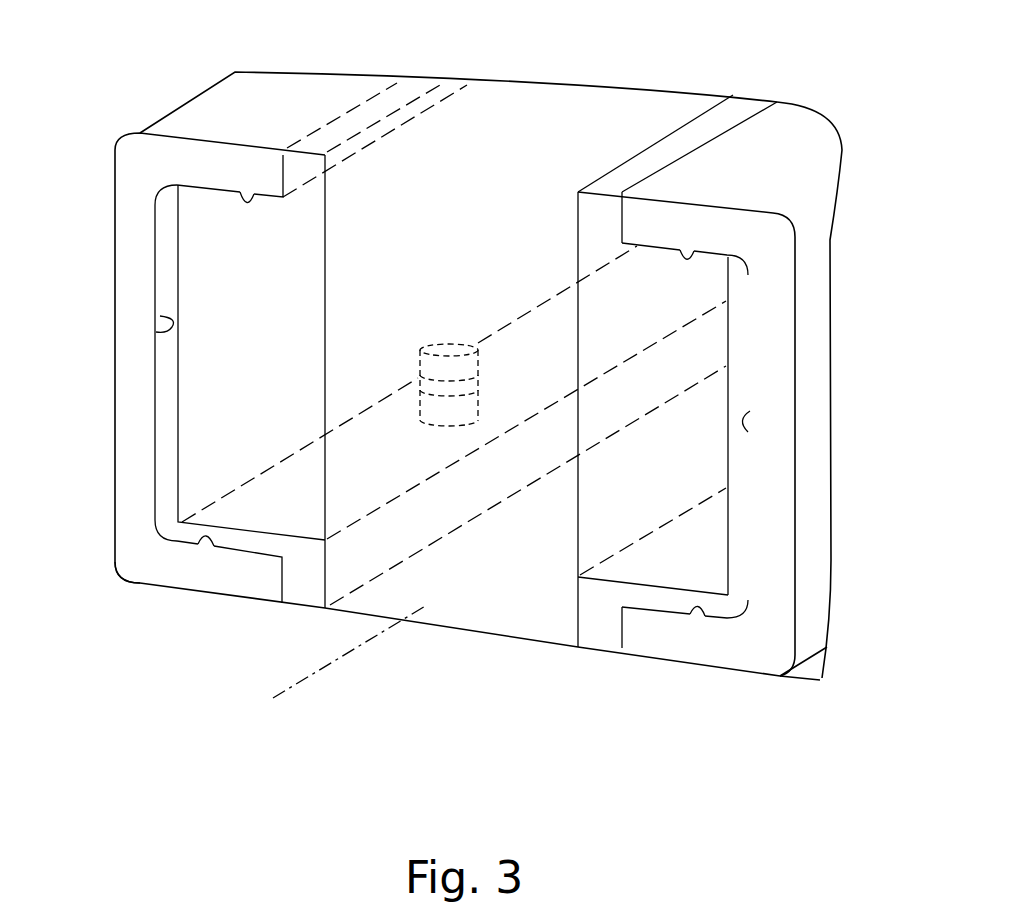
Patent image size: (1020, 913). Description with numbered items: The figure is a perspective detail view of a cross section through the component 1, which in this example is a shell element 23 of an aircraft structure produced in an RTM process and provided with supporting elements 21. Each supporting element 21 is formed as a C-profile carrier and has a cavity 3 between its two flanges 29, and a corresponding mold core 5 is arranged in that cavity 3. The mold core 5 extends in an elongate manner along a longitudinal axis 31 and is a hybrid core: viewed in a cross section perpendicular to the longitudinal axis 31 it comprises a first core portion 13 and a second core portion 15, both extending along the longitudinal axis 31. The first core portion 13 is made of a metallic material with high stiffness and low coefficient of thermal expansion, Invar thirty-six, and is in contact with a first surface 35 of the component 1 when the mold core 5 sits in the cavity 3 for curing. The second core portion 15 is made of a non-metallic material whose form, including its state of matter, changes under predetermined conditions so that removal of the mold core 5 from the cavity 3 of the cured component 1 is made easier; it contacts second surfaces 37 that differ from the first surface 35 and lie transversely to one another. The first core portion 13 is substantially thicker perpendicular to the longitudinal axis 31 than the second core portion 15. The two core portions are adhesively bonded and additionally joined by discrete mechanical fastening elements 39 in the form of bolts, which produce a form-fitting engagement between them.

The component 1 is at (108, 106).
The cavity 3 is at (236, 364).
The mold core 5 is at (434, 192).
The first core portion 13 is at (202, 217).
The second core portion 15 is at (165, 241).
The supporting element 21 is at (137, 430).
The shell element 23 is at (79, 640).
The flange 29 is at (233, 163).
The longitudinal axis 31 is at (305, 680).
The first surface 35 is at (257, 194).
The second surface 37 is at (160, 316).
The mechanical fastening element 39 is at (442, 347).